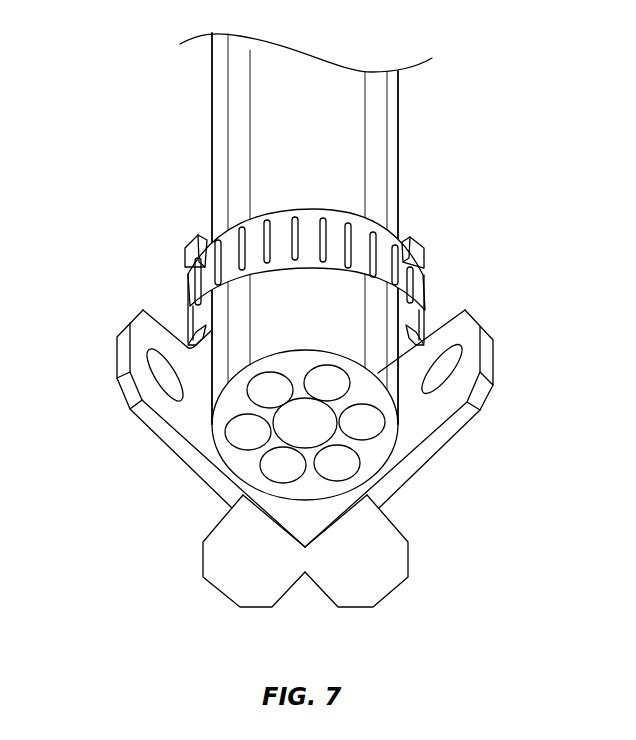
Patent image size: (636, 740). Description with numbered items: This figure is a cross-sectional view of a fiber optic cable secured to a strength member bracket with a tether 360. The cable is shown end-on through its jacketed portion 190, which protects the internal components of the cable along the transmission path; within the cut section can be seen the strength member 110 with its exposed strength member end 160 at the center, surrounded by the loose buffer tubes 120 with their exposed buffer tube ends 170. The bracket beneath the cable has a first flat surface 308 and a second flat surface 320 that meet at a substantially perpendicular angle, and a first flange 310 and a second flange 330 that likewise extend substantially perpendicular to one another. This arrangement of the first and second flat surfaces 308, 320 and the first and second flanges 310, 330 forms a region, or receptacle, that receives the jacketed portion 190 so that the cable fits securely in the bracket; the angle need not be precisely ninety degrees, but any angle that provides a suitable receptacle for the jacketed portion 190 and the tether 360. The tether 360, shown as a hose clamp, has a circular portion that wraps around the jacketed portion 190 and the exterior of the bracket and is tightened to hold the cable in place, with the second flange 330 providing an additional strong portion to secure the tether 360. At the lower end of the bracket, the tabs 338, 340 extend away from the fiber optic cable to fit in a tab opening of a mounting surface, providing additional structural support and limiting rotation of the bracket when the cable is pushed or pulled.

The jacketed portion 190 is at (360, 168).
The tether 360 is at (185, 293).
The second flange 330 is at (178, 255).
The first flange 310 is at (432, 257).
The second flat surface 320 is at (153, 438).
The first flat surface 308 is at (458, 443).
The tab 340 is at (215, 592).
The tab 338 is at (397, 588).
The loose buffer tubes 120 is at (357, 385).
The exposed strength member end 160 is at (318, 420).
The strength member 110 is at (315, 430).
The exposed buffer tube ends 170 is at (342, 465).